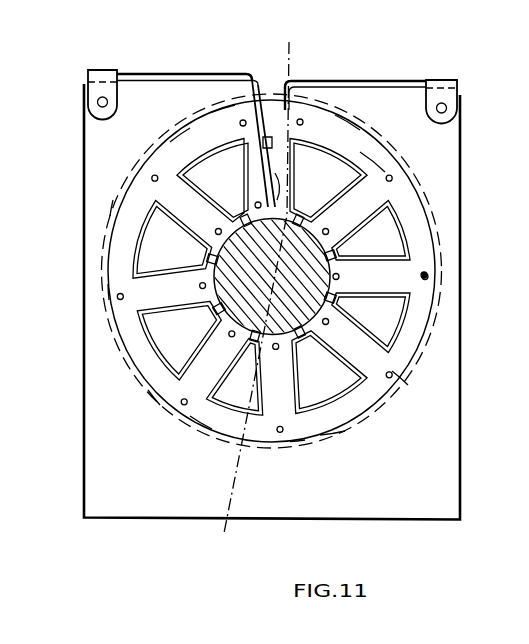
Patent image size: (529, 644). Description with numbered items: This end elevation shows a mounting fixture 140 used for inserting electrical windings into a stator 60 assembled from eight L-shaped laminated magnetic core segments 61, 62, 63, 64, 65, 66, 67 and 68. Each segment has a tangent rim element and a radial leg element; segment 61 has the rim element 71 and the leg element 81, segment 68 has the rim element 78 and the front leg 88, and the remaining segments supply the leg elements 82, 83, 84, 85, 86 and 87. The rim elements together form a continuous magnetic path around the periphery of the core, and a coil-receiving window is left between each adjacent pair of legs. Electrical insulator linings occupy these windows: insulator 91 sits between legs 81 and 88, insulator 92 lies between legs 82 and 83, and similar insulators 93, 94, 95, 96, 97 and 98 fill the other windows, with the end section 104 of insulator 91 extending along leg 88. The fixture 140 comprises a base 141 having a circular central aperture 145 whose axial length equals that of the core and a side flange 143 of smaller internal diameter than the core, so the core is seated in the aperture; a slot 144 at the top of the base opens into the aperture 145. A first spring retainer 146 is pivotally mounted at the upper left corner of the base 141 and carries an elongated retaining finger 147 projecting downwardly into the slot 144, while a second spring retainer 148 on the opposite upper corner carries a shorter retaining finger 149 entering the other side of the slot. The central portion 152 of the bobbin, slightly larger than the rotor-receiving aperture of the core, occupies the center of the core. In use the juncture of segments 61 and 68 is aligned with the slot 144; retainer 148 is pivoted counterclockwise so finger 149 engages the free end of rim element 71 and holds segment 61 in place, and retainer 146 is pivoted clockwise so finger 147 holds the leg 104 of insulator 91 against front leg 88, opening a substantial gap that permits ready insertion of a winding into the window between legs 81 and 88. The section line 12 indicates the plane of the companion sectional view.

The section line 12- 12 is at (318, 37).
The stator 60 is at (412, 224).
The magnetic core segment 61 is at (384, 162).
The magnetic core segment 62 is at (426, 278).
The magnetic core segment 63 is at (406, 390).
The magnetic core segment 64 is at (297, 442).
The magnetic core segment 65 is at (156, 406).
The magnetic core segment 66 is at (108, 291).
The magnetic core segment 67 is at (113, 212).
The magnetic core segment 68 is at (227, 106).
The tangent rim element 71 is at (342, 135).
The tangent rim element 78 is at (190, 138).
The radial leg element 81 is at (336, 211).
The leg element 82 is at (368, 286).
The leg element 83 is at (337, 362).
The leg element 84 is at (270, 393).
The leg element 85 is at (233, 374).
The leg element 86 is at (147, 305).
The leg element 87 is at (166, 216).
The leg element 88 is at (239, 174).
The electrical insulator lining 91 is at (330, 184).
The insulator 92 is at (367, 230).
The pole piece 93 is at (371, 337).
The insulator 94 is at (303, 397).
The insulator 95 is at (234, 372).
The insulator 96 is at (190, 307).
The insulator 97 is at (180, 232).
The insulator 98 is at (234, 170).
The insulator section 104 is at (269, 218).
The mounting fixture 140 is at (420, 65).
The base 141 is at (442, 492).
The side flange 143 is at (330, 443).
The slot 144 is at (292, 80).
The central aperture 145 is at (208, 428).
The first spring retainer 146 is at (180, 72).
The elongated retaining finger 147 is at (267, 100).
The second spring retainer 148 is at (378, 79).
The shorter retaining finger 149 is at (291, 102).
The central portion of bobbin 152 is at (268, 270).